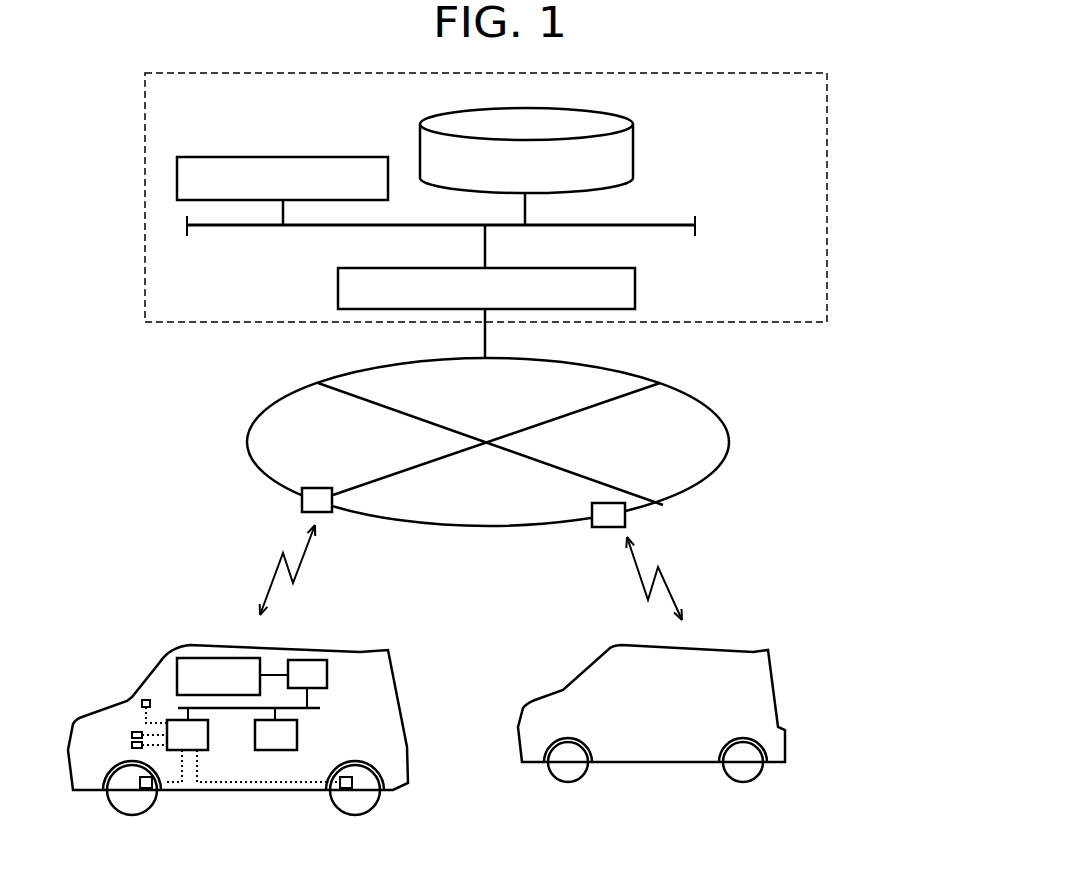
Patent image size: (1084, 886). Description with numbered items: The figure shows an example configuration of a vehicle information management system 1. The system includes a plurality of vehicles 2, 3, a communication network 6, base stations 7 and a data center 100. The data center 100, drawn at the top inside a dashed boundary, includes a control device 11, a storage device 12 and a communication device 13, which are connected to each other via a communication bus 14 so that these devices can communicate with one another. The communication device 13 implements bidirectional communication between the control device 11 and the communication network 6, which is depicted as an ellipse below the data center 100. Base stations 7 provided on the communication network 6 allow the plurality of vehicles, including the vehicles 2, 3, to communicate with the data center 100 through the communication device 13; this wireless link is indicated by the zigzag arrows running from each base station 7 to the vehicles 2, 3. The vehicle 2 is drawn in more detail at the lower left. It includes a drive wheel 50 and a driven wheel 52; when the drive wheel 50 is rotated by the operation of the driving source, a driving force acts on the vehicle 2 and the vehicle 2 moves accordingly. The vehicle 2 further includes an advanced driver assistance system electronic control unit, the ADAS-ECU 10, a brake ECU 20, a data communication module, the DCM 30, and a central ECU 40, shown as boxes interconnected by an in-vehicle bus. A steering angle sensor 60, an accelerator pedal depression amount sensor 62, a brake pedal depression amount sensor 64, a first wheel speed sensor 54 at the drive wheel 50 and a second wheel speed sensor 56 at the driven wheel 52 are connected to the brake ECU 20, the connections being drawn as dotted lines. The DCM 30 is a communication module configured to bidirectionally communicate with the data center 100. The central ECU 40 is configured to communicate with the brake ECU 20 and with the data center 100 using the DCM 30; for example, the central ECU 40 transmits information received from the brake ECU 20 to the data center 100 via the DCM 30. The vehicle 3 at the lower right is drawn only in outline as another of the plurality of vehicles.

The vehicle information management system 1 is at (848, 212).
The data center 100 is at (618, 73).
The control device 11 is at (337, 157).
The storage device 12 is at (583, 105).
The communication device 13 is at (540, 265).
The communication bus 14 is at (620, 222).
The communication network 6 is at (597, 365).
The base station 7 is at (325, 513).
The vehicle 2 is at (372, 652).
The vehicle 3 is at (757, 650).
The data communication module (DCM) 30 is at (242, 658).
The central ECU 40 is at (327, 677).
The brake ECU 20 is at (208, 732).
The advanced driver assistance system-electronic control unit (ADAS-ECU) 10 is at (297, 732).
The steering angle sensor 60 is at (142, 700).
The accelerator pedal depression amount sensor 62 is at (132, 735).
The brake pedal depression amount sensor 64 is at (132, 747).
The drive wheel 50 is at (132, 815).
The driven wheel 52 is at (355, 815).
The first wheel speed sensor 54 is at (150, 788).
The second wheel speed sensor 56 is at (350, 775).